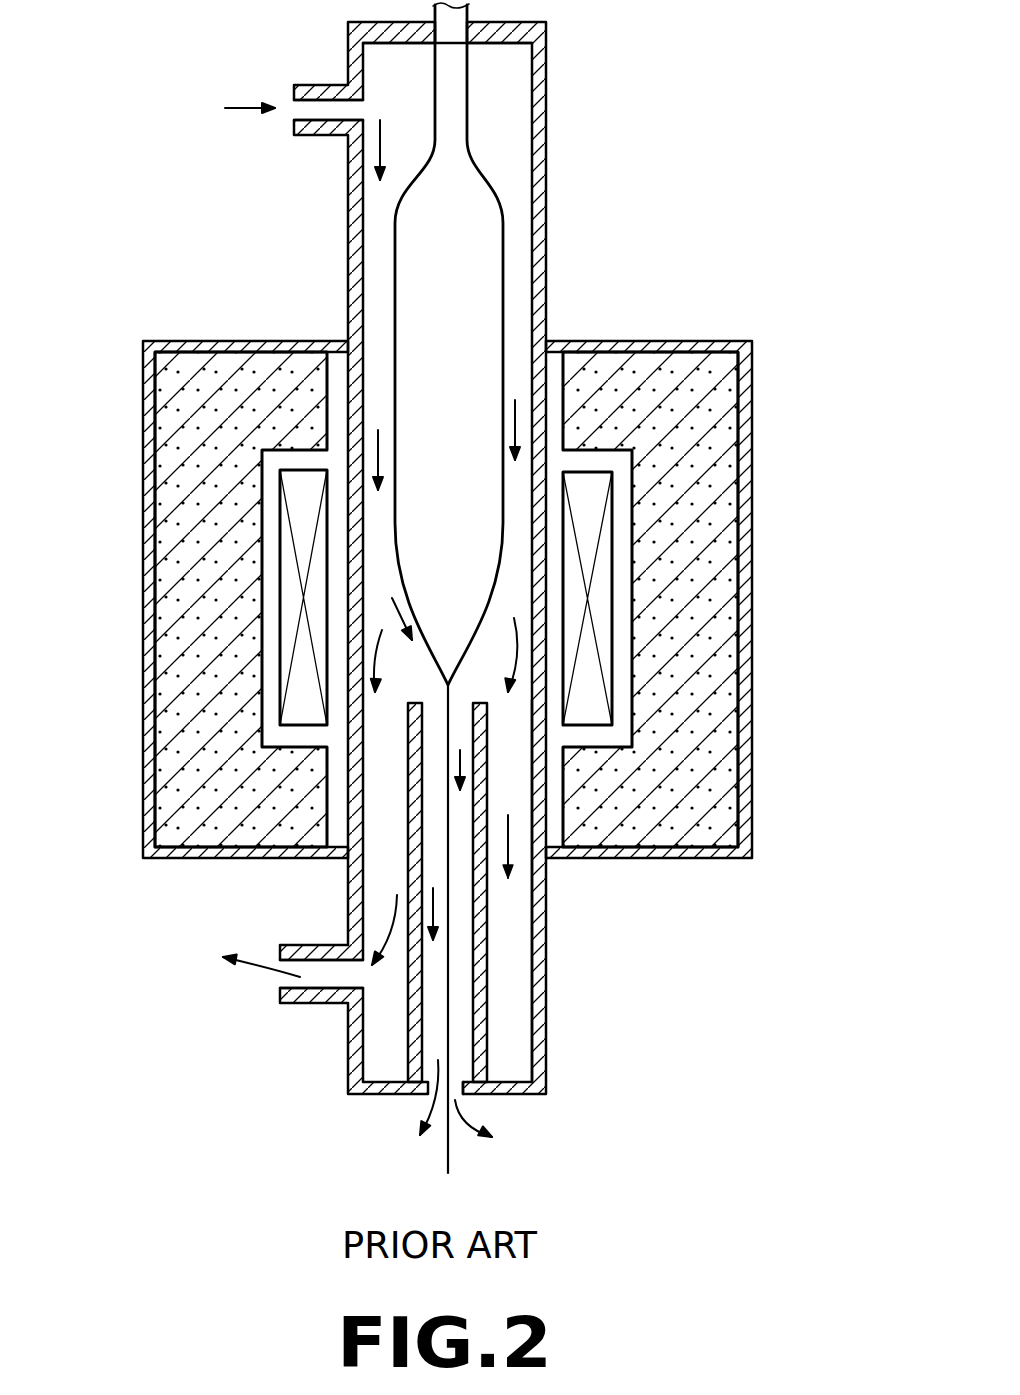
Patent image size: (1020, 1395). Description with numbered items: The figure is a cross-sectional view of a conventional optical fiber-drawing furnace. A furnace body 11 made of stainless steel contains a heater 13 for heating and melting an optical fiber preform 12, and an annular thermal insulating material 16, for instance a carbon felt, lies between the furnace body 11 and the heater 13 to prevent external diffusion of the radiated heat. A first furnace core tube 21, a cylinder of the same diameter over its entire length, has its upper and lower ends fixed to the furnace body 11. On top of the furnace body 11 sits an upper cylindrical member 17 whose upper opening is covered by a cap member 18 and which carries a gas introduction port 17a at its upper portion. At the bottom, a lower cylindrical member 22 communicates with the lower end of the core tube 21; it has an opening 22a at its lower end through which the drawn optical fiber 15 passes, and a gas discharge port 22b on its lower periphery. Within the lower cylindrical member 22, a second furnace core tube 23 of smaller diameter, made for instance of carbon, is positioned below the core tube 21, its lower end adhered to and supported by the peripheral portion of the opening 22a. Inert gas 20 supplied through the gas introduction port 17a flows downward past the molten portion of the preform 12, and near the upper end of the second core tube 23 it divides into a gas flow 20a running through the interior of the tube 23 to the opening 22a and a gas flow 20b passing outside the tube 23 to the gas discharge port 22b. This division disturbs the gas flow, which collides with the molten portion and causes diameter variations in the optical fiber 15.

The furnace body 11 is at (700, 342).
The optical fiber preform 12 is at (485, 263).
The heater 13 is at (287, 557).
The optical fiber 15 is at (448, 1012).
The thermal insulating material 16 is at (175, 433).
The upper cylindrical member 17 is at (550, 118).
The gas introduction port 17a is at (305, 85).
The cap member 18 is at (550, 26).
The inert gas flow 20 is at (355, 150).
The gas flow through second core tube 20a is at (430, 1105).
The gas flow outside second core tube 20b is at (256, 975).
The first furnace core tube 21 is at (534, 765).
The lower cylindrical member 22 is at (538, 974).
The opening 22a is at (463, 1092).
The gas discharge port 22b is at (315, 945).
The second furnace core tube 23 is at (483, 930).